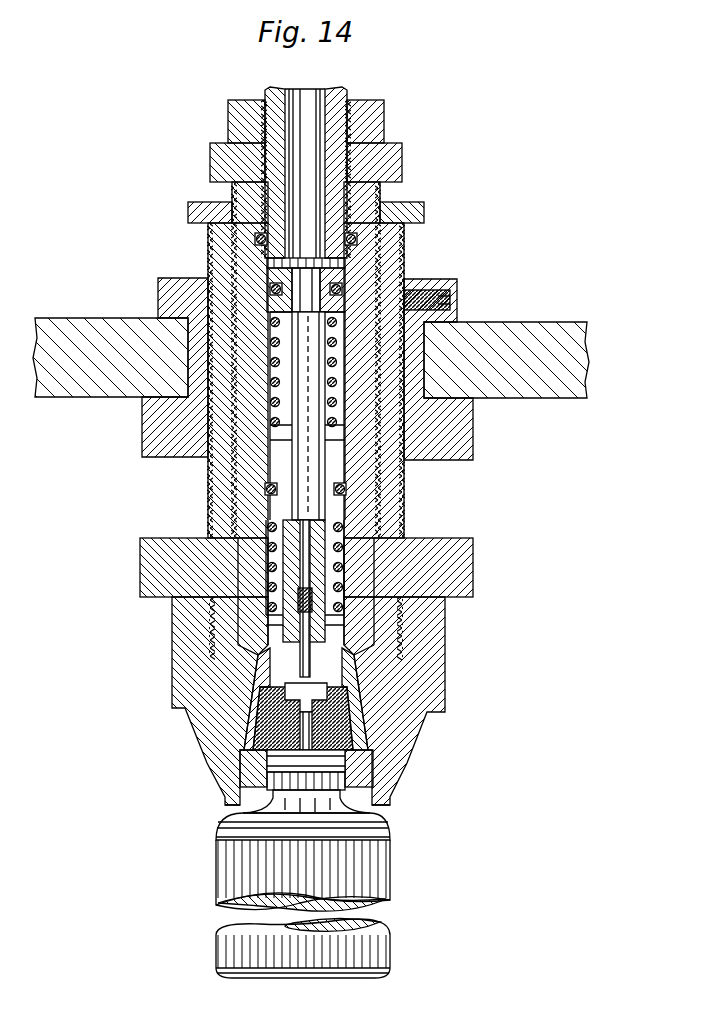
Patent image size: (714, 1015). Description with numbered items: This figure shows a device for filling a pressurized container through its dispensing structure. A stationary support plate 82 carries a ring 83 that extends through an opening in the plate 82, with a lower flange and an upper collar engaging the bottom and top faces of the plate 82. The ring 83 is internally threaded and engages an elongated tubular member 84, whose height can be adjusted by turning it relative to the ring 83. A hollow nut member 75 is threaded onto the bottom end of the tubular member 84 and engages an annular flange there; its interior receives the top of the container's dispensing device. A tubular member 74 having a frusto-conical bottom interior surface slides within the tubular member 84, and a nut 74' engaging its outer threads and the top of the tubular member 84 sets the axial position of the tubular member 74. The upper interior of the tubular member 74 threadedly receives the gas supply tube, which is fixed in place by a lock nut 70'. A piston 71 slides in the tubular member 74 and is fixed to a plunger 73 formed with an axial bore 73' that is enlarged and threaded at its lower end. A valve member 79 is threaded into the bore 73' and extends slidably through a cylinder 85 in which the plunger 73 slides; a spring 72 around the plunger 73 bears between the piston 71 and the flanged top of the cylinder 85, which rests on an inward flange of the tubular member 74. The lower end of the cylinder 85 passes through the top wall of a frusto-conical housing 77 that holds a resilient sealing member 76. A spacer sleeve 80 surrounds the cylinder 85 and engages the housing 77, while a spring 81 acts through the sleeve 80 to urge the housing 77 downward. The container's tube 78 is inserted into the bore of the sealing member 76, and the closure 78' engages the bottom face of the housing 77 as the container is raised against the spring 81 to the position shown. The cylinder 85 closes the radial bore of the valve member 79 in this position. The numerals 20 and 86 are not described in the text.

The valve stem 20 is at (346, 92).
The lock nut 70' is at (324, 179).
The nut 74' is at (332, 206).
The piston 71 is at (346, 276).
The spring 72 is at (396, 298).
The stationary support plate 82 is at (578, 343).
The ring 83 is at (474, 437).
The plunger 73 is at (361, 416).
The elongated tubular member 84 is at (388, 518).
The axial bore 73' is at (374, 597).
The spring 81 is at (268, 530).
The spring seat 86 is at (346, 608).
The tubular member 74 is at (320, 416).
The spacer sleeve 80 is at (240, 655).
The cylinder 85 is at (326, 662).
The hollow nut member 75 is at (430, 690).
The valve member 79 is at (284, 712).
The resilient sealing member 76 is at (356, 776).
The frusto-conical housing 77 is at (356, 786).
The tube 78 is at (283, 791).
The closure 78' is at (275, 893).